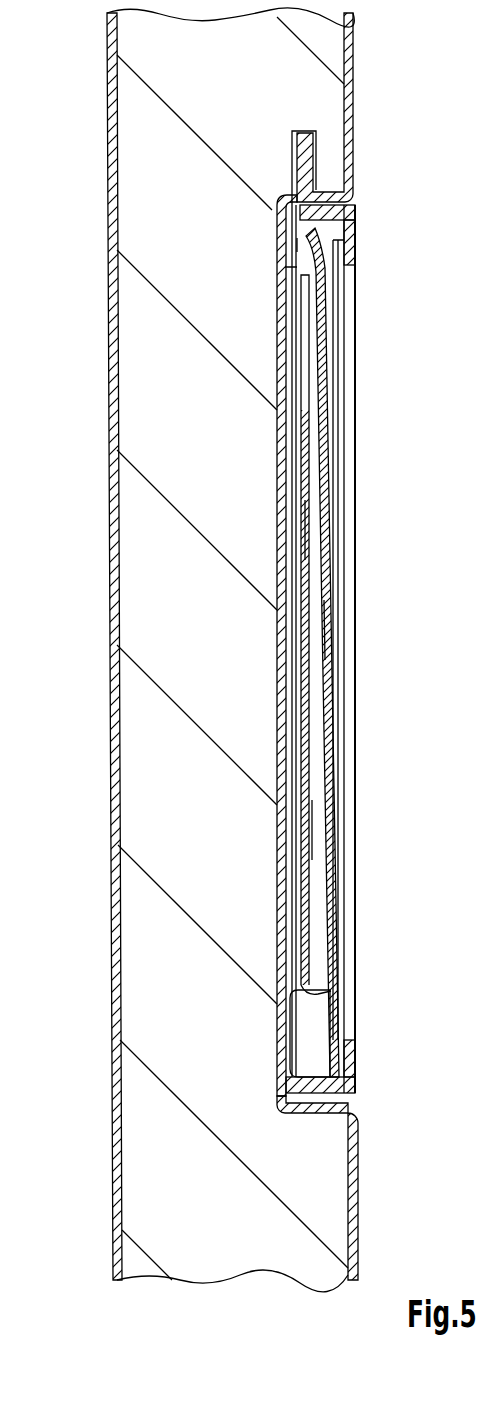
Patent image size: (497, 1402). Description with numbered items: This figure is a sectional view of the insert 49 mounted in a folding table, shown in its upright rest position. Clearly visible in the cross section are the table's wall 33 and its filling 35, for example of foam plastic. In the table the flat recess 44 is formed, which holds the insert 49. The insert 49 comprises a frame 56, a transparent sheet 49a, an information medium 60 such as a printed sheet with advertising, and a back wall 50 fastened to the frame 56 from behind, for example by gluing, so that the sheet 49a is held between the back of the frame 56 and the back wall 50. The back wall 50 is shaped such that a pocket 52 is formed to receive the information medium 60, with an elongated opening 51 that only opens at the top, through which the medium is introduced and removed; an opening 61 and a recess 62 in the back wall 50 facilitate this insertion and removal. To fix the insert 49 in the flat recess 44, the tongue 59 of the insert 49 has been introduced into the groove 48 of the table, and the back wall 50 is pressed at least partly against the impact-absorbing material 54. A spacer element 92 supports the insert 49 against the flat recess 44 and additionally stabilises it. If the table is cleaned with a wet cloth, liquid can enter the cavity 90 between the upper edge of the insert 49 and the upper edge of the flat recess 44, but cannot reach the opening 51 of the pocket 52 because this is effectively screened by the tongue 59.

The wall 33 is at (117, 1200).
The filling 35 is at (137, 688).
The flat recess 44 is at (364, 1101).
The groove 48 is at (301, 133).
The insert 49 is at (387, 528).
The transparent sheet 49a is at (342, 297).
The back wall 50 is at (313, 830).
The elongated opening 51 is at (294, 246).
The pocket 52 is at (329, 630).
The impact-absorbing material 54 is at (290, 288).
The frame 56 is at (346, 228).
The tongue 59 is at (317, 152).
The information medium 60 is at (328, 358).
The opening 61 is at (307, 530).
The recess 62 is at (305, 327).
The cavity 90 is at (357, 202).
The spacer element 92 is at (305, 1048).